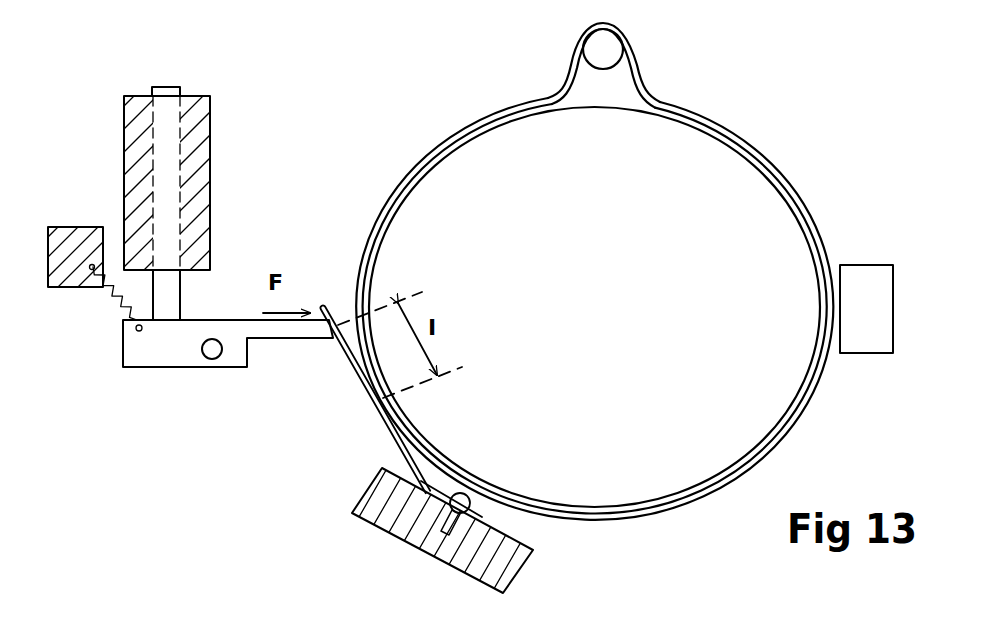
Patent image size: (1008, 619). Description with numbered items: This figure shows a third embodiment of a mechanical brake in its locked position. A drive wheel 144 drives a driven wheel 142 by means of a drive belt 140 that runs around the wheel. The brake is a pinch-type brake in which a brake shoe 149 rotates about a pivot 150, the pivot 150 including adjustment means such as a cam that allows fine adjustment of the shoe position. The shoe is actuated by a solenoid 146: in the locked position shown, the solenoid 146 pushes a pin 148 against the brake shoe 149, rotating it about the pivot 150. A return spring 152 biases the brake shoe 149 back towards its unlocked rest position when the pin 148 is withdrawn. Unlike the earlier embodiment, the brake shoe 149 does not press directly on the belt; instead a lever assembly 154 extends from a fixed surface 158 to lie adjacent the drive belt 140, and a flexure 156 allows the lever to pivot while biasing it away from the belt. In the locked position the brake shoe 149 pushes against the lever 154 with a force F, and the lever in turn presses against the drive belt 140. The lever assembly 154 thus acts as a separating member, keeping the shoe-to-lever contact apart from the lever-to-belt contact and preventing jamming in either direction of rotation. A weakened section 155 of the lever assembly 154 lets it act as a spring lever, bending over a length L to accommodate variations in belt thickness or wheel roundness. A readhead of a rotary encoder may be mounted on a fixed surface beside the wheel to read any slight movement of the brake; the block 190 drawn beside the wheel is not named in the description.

The drive belt 140 is at (418, 170).
The driven wheel 142 is at (770, 205).
The drive wheel 144 is at (608, 50).
The solenoid 146 is at (132, 187).
The pin 148 is at (168, 85).
The brake shoe 149 is at (158, 343).
The pivot 150 is at (212, 360).
The return spring 152 is at (113, 298).
The lever assembly 154 is at (363, 405).
The weakened section 155 is at (413, 472).
The flexure 156 is at (472, 501).
The fixed surface 158 is at (393, 523).
The sensor block 190 is at (866, 340).